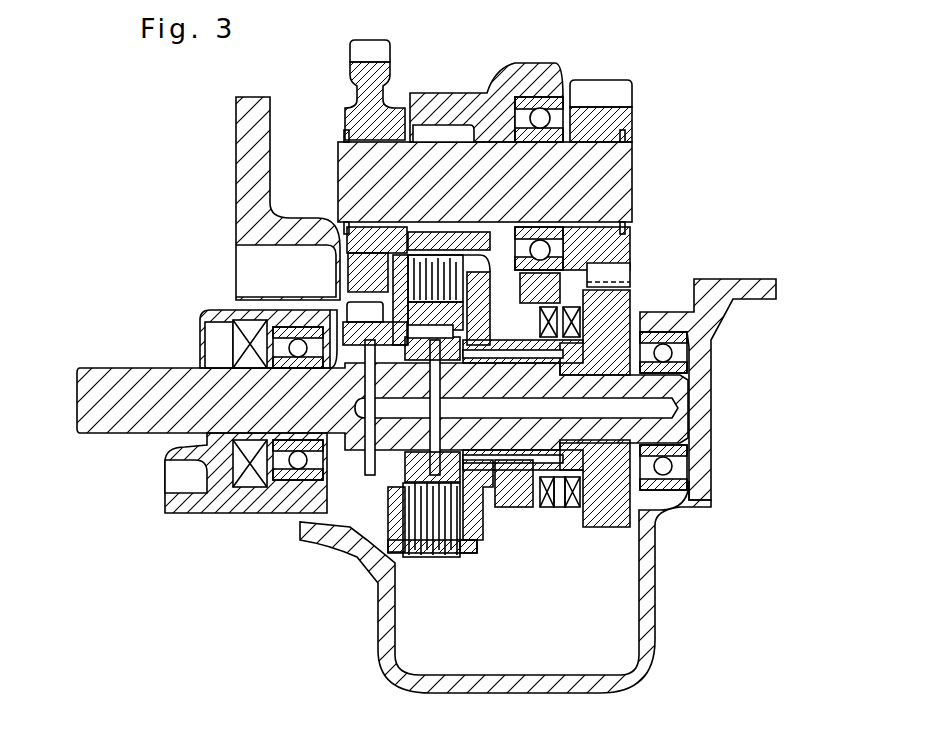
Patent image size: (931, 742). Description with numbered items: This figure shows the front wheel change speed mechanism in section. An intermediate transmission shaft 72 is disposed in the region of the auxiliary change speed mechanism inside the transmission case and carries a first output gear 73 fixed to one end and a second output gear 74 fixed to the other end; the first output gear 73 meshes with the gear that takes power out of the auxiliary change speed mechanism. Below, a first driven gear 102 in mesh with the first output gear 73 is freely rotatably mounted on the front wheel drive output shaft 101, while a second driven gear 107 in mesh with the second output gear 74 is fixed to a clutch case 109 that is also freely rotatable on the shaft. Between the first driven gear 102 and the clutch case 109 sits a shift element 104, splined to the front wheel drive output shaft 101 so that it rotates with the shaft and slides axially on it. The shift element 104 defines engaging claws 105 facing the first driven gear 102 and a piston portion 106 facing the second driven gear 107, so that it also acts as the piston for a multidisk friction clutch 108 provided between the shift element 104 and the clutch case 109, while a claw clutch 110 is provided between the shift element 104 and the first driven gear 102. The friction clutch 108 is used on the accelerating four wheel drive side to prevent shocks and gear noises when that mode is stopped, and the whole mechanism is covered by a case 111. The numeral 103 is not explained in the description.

The second output gear 74 is at (393, 63).
The first output gear 73 is at (630, 112).
The intermediate transmission shaft 72 is at (622, 190).
The first driven gear 102 is at (636, 308).
The front wheel drive output shaft 101 is at (133, 420).
The second driven gear 107 is at (337, 484).
The clutch case 109 is at (400, 517).
The multidisk friction clutch 108 is at (425, 565).
The piston portion 106 is at (465, 550).
The shift element 104 is at (488, 535).
The engaging claws 105 is at (540, 509).
The claw clutch 110 is at (556, 518).
The seal ring 103 is at (574, 510).
The case 111 is at (652, 575).